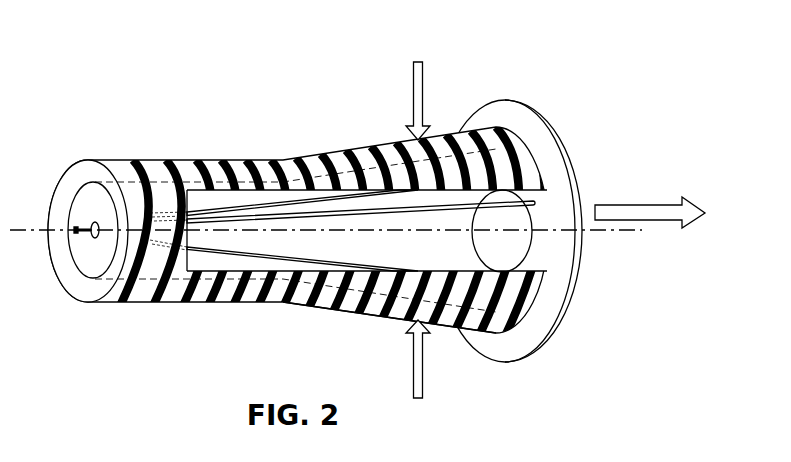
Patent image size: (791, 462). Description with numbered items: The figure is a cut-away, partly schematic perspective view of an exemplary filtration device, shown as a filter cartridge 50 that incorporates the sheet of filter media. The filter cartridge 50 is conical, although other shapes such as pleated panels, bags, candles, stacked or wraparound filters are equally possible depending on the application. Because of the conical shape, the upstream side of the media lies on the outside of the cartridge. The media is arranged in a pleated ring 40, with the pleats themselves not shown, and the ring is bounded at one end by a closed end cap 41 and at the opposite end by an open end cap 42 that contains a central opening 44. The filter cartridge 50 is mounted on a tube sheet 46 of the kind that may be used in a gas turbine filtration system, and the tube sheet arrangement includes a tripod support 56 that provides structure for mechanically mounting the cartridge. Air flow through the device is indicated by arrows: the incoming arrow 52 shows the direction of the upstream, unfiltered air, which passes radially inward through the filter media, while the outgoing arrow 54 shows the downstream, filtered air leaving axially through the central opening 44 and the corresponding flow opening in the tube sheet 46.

The pleated ring 40 is at (188, 173).
The closed end cap 41 is at (75, 188).
The open end cap 42 is at (536, 305).
The central opening 44 is at (528, 243).
The tube sheet 46 is at (502, 113).
The filter cartridge 50 is at (170, 287).
The incoming arrow 52 is at (413, 112).
The outgoing arrow 54 is at (657, 210).
The tripod support 56 is at (303, 158).